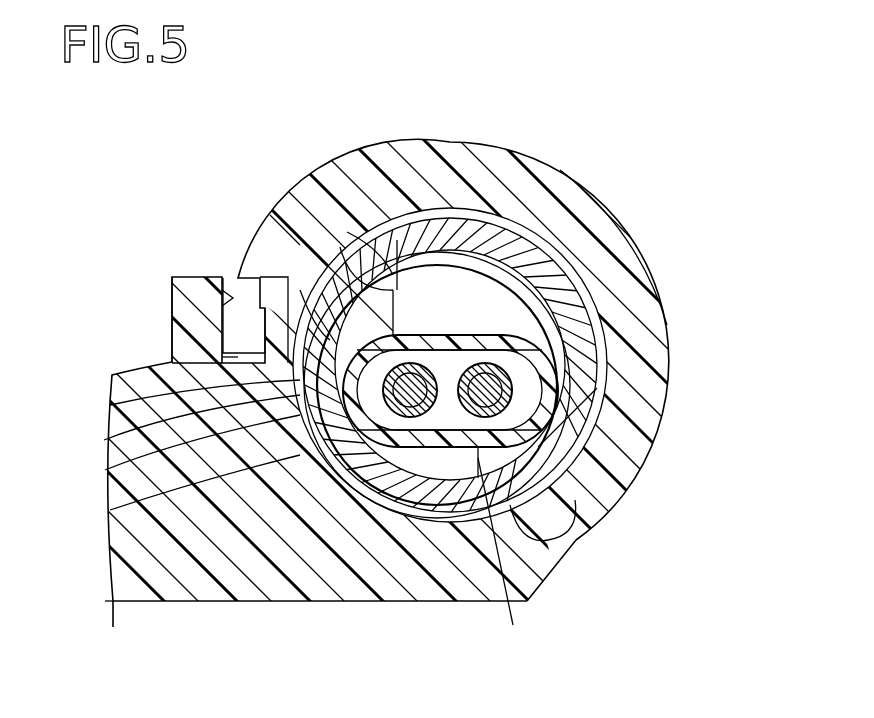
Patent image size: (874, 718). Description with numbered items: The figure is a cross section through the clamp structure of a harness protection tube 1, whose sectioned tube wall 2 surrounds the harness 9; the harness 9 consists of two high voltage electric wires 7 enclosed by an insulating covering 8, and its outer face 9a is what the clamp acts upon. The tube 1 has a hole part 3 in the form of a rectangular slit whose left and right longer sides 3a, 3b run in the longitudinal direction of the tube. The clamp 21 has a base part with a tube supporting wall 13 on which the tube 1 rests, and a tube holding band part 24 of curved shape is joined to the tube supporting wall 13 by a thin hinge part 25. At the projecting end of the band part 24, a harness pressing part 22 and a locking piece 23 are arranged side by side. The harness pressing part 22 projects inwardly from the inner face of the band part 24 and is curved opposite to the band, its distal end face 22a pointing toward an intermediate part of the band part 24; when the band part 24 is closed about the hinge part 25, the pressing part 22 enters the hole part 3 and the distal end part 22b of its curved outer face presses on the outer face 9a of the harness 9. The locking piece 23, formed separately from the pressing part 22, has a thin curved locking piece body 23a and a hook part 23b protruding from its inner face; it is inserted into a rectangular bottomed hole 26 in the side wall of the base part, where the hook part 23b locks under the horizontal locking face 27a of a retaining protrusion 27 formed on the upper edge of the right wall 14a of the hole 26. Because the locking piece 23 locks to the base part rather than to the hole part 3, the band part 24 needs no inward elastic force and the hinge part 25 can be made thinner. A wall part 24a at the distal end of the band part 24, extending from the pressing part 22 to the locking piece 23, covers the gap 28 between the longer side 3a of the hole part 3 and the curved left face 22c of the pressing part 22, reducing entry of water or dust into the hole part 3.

The harness protection tube 1 is at (570, 475).
The ring member 2 is at (468, 227).
The hole part 3 is at (347, 257).
The left longer side 3a is at (325, 325).
The right longer side 3b is at (397, 290).
The high voltage electric wires 7 is at (452, 420).
The insulating covering 8 is at (500, 554).
The harness 9 is at (418, 458).
The outer face of the harness 9a is at (437, 335).
The tube supporting wall 13 is at (273, 500).
The right wall 14a is at (215, 365).
The clamp 21 is at (242, 614).
The harness pressing part 22 is at (410, 275).
The distal end face 22a is at (393, 305).
The distal end part 22b is at (295, 455).
The curved left face 22c is at (112, 420).
The locking piece 23 is at (225, 300).
The locking piece body 23a is at (232, 288).
The hook part 23b is at (180, 300).
The tube holding band part 24 is at (183, 345).
The wall part 24a is at (282, 232).
The hinge part 25 is at (570, 540).
The bottomed hole 26 is at (238, 356).
The retaining protrusion 27 is at (262, 300).
The horizontal locking face 27a is at (252, 278).
The gap 28 is at (300, 385).